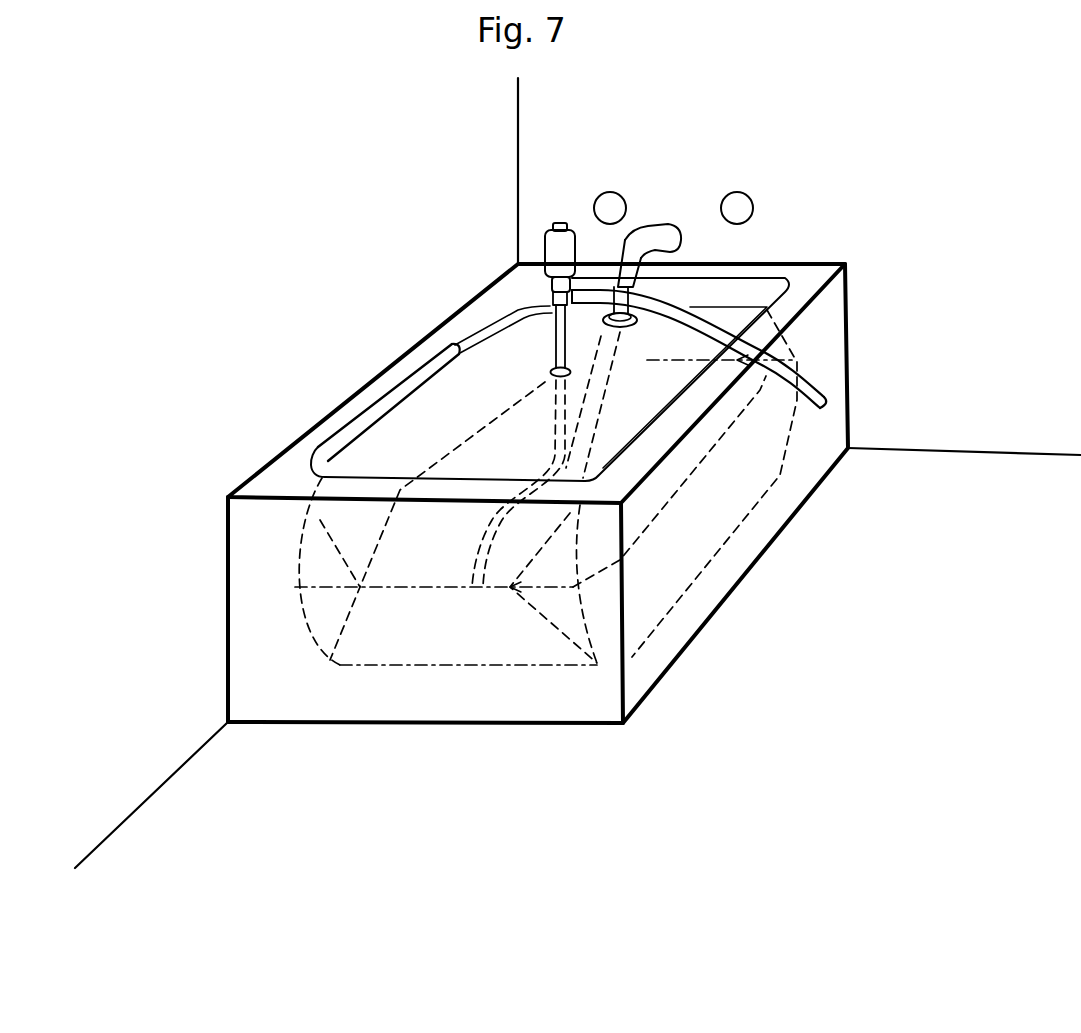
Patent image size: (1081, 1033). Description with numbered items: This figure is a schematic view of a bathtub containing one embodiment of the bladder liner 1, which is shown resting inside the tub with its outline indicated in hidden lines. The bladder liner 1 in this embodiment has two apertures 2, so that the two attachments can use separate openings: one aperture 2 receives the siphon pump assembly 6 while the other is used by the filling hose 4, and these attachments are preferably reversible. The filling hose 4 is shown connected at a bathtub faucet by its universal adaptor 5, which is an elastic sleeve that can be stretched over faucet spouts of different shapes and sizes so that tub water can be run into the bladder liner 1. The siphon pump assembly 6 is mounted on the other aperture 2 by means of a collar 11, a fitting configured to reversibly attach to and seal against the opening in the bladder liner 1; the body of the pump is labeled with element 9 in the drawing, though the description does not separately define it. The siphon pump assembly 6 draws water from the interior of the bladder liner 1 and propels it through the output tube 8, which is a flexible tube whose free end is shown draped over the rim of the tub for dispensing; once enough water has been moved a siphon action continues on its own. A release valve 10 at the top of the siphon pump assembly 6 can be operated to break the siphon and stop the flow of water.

The bladder liner 1 is at (318, 455).
The aperture 2 is at (652, 322).
The filling hose 4 is at (656, 277).
The universal adaptor 5 is at (664, 249).
The siphon pump assembly 6 is at (535, 290).
The output tube 8 is at (843, 403).
The faucet body 9 is at (528, 245).
The release valve 10 is at (561, 216).
The collar 11 is at (532, 372).